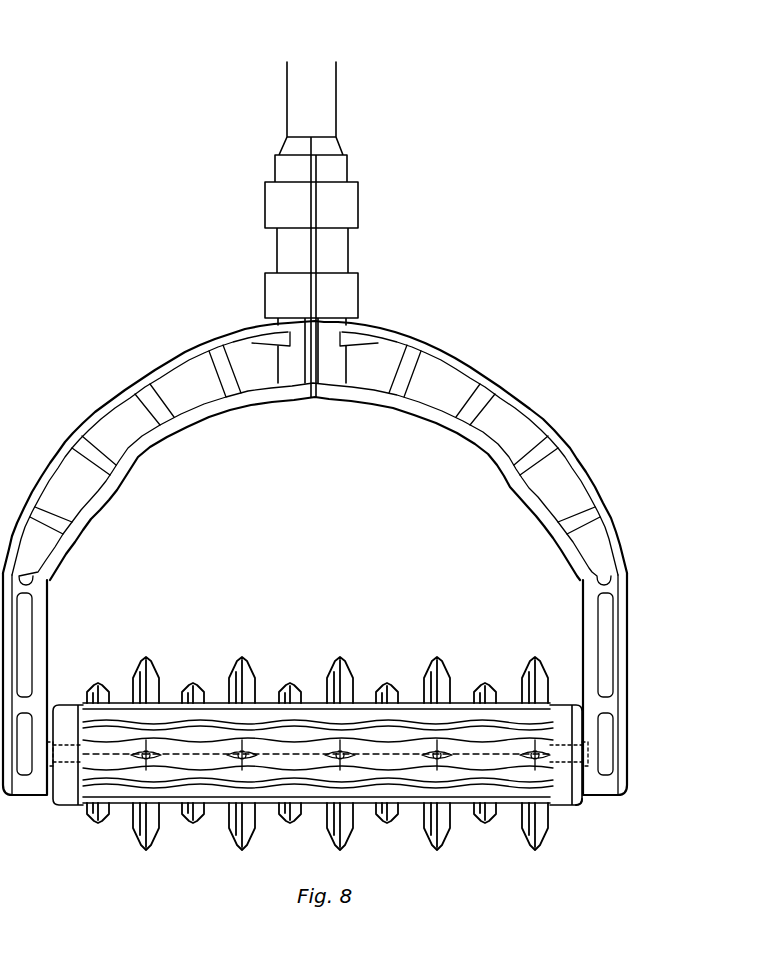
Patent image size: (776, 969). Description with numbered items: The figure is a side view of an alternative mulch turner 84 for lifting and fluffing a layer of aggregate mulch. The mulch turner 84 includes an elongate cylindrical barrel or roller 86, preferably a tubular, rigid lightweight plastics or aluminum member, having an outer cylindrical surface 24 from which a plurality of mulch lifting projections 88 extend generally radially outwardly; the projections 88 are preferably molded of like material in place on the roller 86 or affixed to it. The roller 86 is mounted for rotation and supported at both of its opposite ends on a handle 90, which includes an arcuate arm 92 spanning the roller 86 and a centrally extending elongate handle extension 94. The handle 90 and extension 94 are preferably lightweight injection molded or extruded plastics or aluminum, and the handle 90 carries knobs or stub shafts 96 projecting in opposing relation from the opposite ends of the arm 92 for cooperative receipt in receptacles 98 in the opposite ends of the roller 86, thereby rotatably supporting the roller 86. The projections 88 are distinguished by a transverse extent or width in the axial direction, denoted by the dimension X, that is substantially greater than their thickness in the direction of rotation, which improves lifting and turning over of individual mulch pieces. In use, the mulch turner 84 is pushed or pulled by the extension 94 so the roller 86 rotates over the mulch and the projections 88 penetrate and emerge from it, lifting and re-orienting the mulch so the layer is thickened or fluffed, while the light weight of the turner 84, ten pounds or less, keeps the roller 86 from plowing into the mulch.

The handle extension 94 is at (336, 103).
The arcuate arm 92 is at (477, 364).
The handle 90 is at (630, 572).
The mulch turner 84 is at (376, 586).
The roller 86 is at (580, 802).
The mulch lifting projections 88 is at (105, 690).
The stub shafts 96 is at (73, 762).
The receptacles 98 is at (66, 742).
The outer cylindrical surface 24 is at (412, 700).